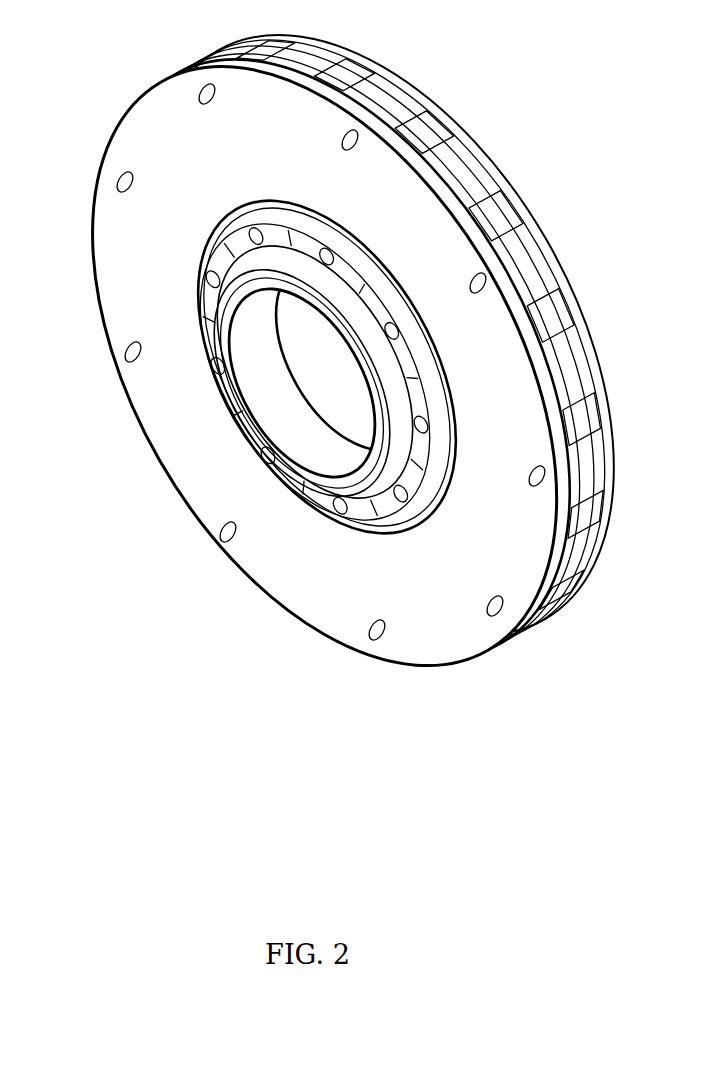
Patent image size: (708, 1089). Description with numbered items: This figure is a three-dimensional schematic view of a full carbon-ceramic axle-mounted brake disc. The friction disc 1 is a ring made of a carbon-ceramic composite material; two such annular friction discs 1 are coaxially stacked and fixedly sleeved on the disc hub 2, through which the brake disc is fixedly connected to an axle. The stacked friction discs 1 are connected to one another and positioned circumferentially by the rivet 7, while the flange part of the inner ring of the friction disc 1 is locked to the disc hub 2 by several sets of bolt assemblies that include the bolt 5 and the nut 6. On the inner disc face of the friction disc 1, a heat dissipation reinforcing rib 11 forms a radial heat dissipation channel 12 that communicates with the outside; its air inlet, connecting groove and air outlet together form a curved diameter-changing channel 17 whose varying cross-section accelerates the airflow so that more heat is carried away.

The friction disc 1 is at (466, 153).
The disc hub 2 is at (292, 263).
The bolt 5 is at (295, 367).
The nut 6 is at (178, 523).
The rivet 7 is at (202, 91).
The heat dissipation reinforcing rib 11 is at (475, 274).
The radial heat dissipation channel 12 is at (505, 217).
The curved diameter-changing channel 17 is at (135, 61).